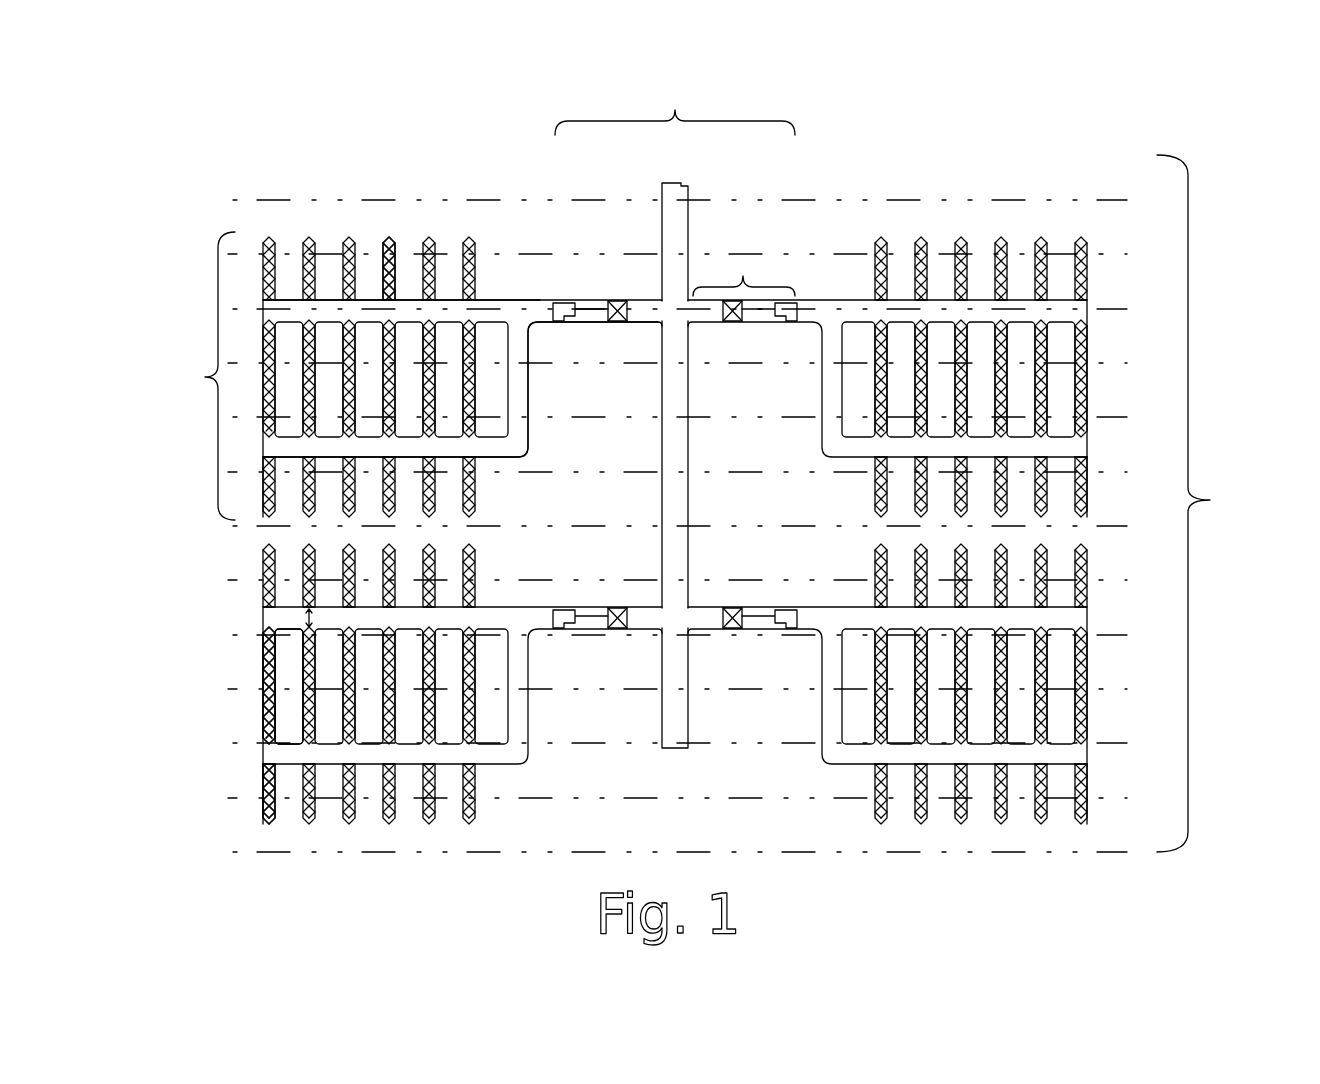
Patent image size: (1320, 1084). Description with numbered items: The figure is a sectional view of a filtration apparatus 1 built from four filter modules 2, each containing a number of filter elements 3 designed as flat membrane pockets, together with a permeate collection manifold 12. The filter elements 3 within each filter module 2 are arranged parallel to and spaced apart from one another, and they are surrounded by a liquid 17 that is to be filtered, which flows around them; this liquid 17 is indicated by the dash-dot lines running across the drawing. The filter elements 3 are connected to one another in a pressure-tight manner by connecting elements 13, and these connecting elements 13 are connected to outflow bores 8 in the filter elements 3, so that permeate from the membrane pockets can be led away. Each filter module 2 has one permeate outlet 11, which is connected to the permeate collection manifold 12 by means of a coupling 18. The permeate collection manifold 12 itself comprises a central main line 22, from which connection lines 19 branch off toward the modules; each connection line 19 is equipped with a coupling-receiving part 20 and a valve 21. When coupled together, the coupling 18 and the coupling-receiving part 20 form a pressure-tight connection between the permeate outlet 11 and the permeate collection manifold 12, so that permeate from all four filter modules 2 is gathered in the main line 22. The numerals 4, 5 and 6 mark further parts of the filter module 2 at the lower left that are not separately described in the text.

The apparatus 1 is at (1206, 503).
The filter module 2 is at (195, 376).
The filter element 3 is at (389, 238).
The middle strip 4 is at (263, 668).
The finger electrode 5 is at (263, 722).
The lower strip 6 is at (263, 790).
The outflow bore 8 is at (305, 616).
The permeate outlet 11 is at (528, 390).
The permeate collection manifold 12 is at (675, 98).
The connecting element 13 is at (288, 300).
The liquid 17 is at (905, 198).
The coupling 18 is at (553, 302).
The connection line 19 is at (744, 259).
The coupling-receiving part 20 is at (783, 320).
The valve 21 is at (731, 610).
The main line 22 is at (675, 480).